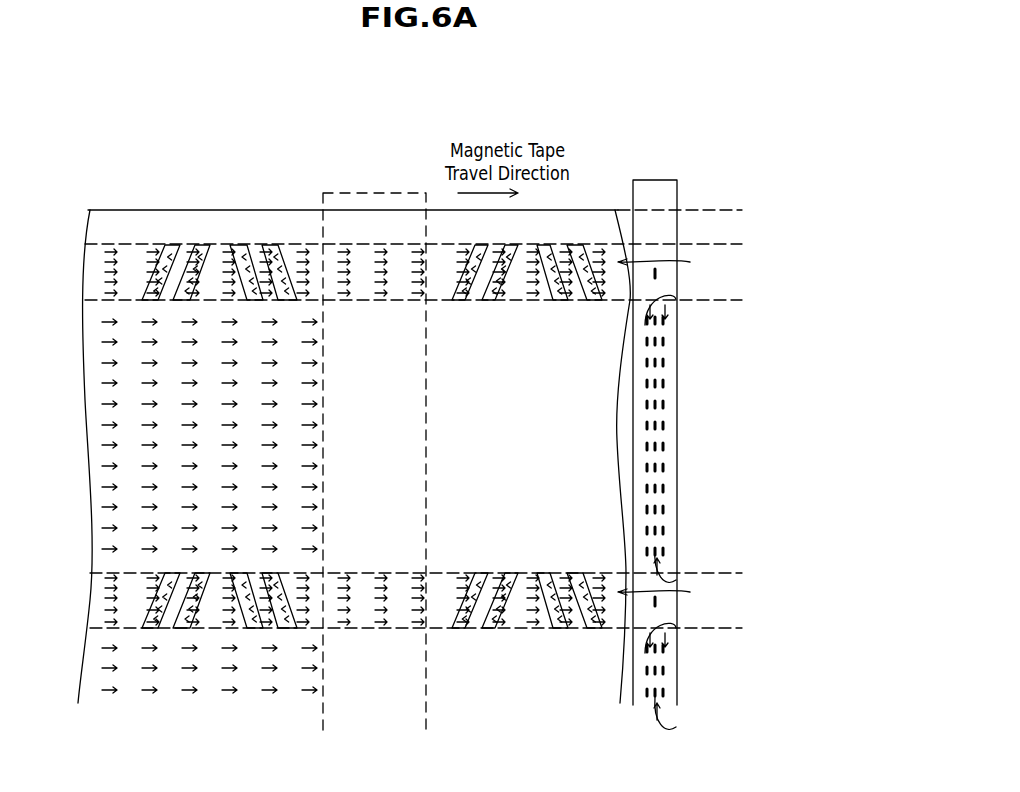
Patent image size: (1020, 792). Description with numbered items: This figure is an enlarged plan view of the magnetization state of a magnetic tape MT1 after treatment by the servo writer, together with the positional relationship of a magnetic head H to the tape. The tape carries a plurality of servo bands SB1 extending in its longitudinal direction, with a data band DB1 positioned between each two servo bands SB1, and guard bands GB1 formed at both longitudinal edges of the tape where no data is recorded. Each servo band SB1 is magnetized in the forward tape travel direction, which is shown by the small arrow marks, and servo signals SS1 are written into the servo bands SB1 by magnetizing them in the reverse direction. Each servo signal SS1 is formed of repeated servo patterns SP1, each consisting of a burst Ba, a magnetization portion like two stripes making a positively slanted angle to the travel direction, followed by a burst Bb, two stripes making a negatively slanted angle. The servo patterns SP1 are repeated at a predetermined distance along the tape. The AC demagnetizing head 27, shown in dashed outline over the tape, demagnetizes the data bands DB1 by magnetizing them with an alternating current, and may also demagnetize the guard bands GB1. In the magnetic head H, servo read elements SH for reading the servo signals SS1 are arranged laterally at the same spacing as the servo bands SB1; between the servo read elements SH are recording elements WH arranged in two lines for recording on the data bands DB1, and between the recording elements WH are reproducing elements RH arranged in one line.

The magnetic tape MT1 is at (132, 208).
The AC demagnetizing head 27 is at (342, 193).
The servo pattern SP1 is at (370, 384).
The burst Ba is at (213, 244).
The burst Bb is at (266, 399).
The servo band SB1 is at (390, 243).
The magnetic head H is at (653, 180).
The guard band GB1 is at (745, 210).
The data band DB1 is at (745, 313).
The servo signal SS1 is at (673, 426).
The servo read element SH is at (658, 273).
The recording element WH is at (676, 300).
The reproducing element RH is at (676, 580).